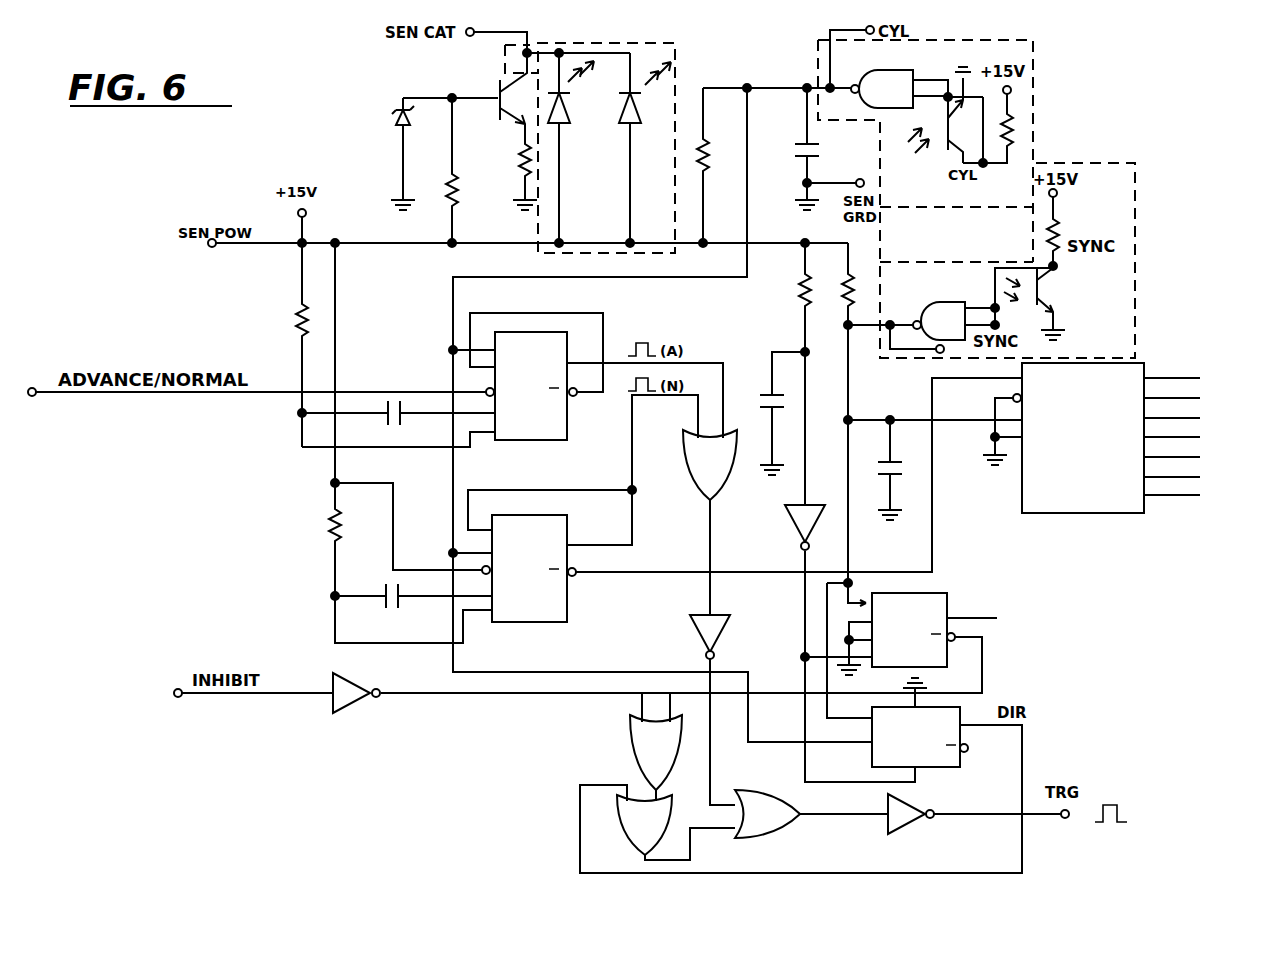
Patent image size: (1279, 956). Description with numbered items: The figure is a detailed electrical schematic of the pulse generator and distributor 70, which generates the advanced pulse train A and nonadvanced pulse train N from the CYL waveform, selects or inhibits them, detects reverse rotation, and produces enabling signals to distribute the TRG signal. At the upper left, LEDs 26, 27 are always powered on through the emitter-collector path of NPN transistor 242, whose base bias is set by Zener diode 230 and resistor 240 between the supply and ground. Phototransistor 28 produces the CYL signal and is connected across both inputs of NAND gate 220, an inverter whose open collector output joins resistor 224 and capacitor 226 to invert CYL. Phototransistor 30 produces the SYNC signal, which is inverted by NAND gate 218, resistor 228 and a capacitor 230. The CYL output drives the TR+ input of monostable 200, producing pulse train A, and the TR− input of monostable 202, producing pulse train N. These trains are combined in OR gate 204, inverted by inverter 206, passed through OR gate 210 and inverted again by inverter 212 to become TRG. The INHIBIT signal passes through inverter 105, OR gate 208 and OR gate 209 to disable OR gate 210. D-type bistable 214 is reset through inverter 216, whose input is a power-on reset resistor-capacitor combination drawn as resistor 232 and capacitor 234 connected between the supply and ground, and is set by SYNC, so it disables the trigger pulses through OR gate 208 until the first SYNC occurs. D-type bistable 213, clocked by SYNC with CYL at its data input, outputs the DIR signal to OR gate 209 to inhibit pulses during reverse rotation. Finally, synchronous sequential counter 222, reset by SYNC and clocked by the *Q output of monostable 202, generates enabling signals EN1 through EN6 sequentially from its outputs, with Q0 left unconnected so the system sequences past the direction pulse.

The LED 26 is at (565, 125).
The LED 27 is at (642, 110).
The phototransistor 28 is at (935, 148).
The phototransistor 30 is at (1048, 292).
The pulse generator and distributor 70 is at (1112, 125).
The inverter 105 is at (355, 705).
The monostable multivibrator 200 is at (567, 418).
The monostable multivibrator 202 is at (567, 598).
The OR gate 204 is at (688, 478).
The inverter 206 is at (727, 618).
The OR gate 208 is at (630, 732).
The OR gate 209 is at (618, 833).
The OR gate 210 is at (780, 790).
The inverter 212 is at (912, 800).
The D-type bistable multivibrator 213 is at (968, 750).
The D-type bistable multivibrator 214 is at (930, 593).
The inverter 216 is at (788, 520).
The NAND gate 218 is at (940, 302).
The NAND gate 220 is at (893, 70).
The synchronous sequential counter 222 is at (1055, 513).
The resistor 224 is at (700, 140).
The capacitor 226 is at (816, 146).
The resistor 228 is at (855, 288).
The Zener diode 230 is at (399, 114).
The resistor 232 is at (800, 278).
The capacitor 234 is at (772, 393).
The resistor 240 is at (460, 192).
The NPN transistor 242 is at (497, 90).